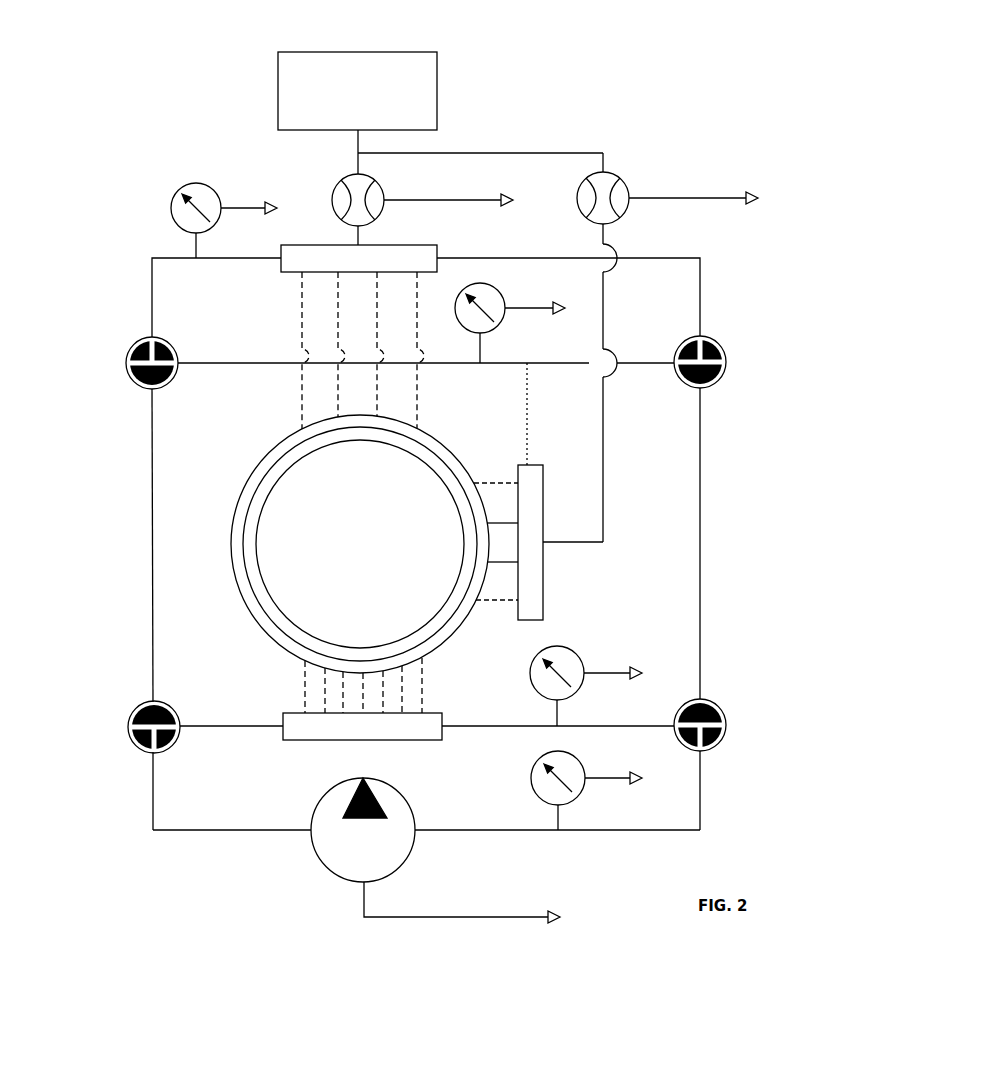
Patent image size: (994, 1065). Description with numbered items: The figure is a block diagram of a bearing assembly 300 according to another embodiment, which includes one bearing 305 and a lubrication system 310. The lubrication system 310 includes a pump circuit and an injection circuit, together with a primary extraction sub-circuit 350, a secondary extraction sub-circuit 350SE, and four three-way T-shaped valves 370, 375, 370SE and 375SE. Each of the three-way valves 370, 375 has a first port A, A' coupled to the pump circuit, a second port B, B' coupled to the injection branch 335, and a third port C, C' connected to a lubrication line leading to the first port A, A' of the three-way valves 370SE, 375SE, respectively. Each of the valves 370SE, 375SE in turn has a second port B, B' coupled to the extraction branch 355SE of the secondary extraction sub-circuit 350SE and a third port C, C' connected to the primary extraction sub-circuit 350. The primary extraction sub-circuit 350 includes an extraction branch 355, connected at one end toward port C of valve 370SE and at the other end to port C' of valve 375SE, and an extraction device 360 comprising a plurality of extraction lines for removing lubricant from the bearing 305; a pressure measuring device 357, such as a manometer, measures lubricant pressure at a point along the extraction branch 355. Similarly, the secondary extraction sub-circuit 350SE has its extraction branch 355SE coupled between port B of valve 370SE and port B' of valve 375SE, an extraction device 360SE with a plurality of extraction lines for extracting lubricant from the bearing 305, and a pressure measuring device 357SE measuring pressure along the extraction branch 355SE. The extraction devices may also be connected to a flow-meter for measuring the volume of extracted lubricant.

The bearing assembly 300 is at (705, 98).
The bearing 305 is at (360, 506).
The lubrication system 310 is at (205, 878).
The injection branch 335 is at (225, 726).
The primary extraction sub-circuit 350 is at (500, 243).
The secondary extraction sub-circuit 350SE is at (569, 393).
The extraction branch 355 is at (150, 283).
The extraction branch 355SE is at (222, 363).
The pressure measuring device 357 is at (192, 182).
The pressure measuring device 357SE is at (505, 306).
The extraction device 360 is at (342, 246).
The extraction device 360SE is at (545, 572).
The 3-way valve 370 is at (135, 745).
The 3-way valve 370SE is at (128, 375).
The 3-way valve 375 is at (720, 745).
The 3-way valve 375SE is at (718, 378).